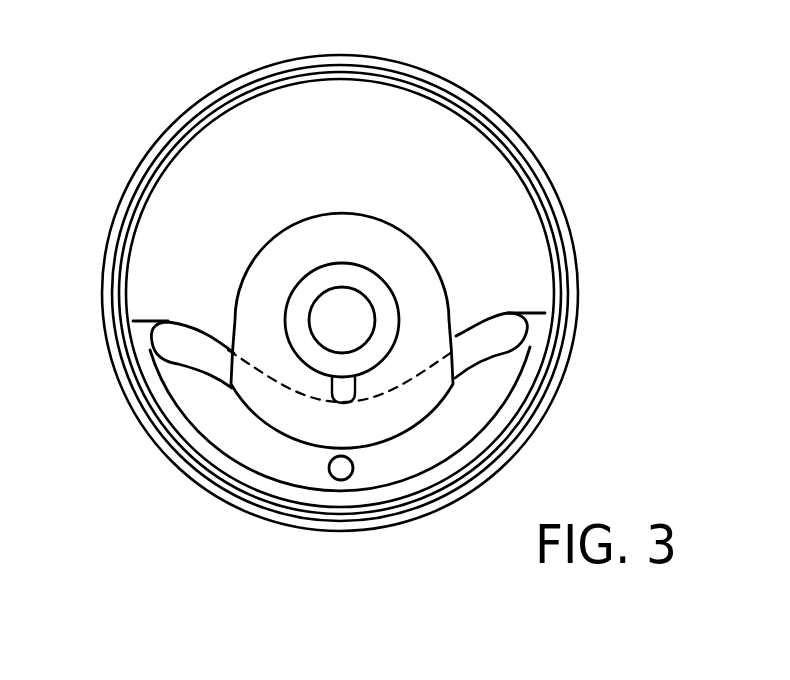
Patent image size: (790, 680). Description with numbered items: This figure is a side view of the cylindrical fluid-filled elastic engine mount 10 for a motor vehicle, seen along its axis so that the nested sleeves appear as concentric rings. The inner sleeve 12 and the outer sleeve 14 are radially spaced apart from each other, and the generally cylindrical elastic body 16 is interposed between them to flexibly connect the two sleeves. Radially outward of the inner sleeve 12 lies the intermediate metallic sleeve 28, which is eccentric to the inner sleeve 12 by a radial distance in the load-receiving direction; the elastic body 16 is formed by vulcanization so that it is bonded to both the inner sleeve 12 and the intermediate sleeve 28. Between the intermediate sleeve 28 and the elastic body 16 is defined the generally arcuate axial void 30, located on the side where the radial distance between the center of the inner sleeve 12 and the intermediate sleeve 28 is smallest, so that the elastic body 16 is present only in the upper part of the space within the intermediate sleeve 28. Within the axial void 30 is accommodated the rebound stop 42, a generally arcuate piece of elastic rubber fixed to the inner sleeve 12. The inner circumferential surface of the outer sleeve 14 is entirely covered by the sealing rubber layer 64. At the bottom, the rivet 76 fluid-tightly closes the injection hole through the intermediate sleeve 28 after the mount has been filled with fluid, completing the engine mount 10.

The engine mount 10 is at (175, 75).
The inner sleeve 12 is at (382, 290).
The outer sleeve 14 is at (462, 90).
The elastic body 16 is at (143, 238).
The intermediate metallic sleeve 28 is at (308, 73).
The axial void 30 is at (498, 340).
The rebound stop 42 is at (257, 237).
The sealing rubber layer 64 is at (565, 289).
The rivet 76 is at (342, 473).